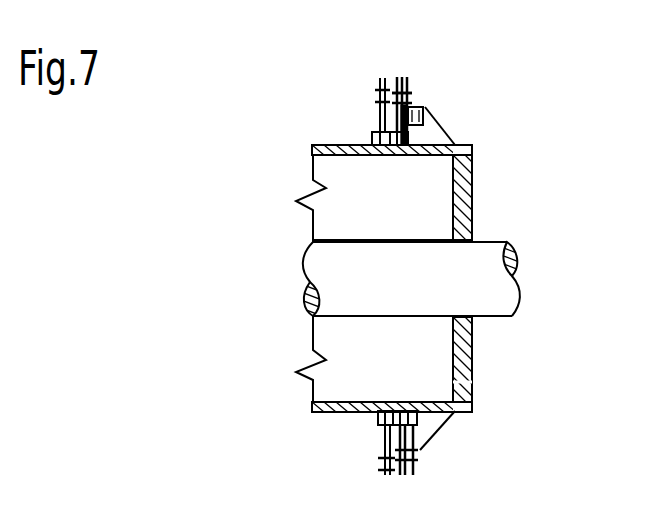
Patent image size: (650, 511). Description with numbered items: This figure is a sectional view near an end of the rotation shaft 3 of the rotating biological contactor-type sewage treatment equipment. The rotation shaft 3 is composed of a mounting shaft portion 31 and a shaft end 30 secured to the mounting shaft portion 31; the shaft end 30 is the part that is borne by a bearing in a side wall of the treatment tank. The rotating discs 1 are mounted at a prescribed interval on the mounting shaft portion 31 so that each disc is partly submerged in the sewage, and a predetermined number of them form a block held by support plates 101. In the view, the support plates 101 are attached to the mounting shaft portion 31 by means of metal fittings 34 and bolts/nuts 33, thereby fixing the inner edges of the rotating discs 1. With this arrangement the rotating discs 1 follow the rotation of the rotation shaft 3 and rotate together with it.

The rotation shaft 3 is at (510, 129).
The rotating disc 1 is at (397, 78).
The support plate 101 is at (410, 87).
The shaft end 30 is at (490, 250).
The mounting shaft portion 31 is at (332, 145).
The bolts/nuts 33 is at (423, 107).
The metal fitting 34 is at (437, 135).